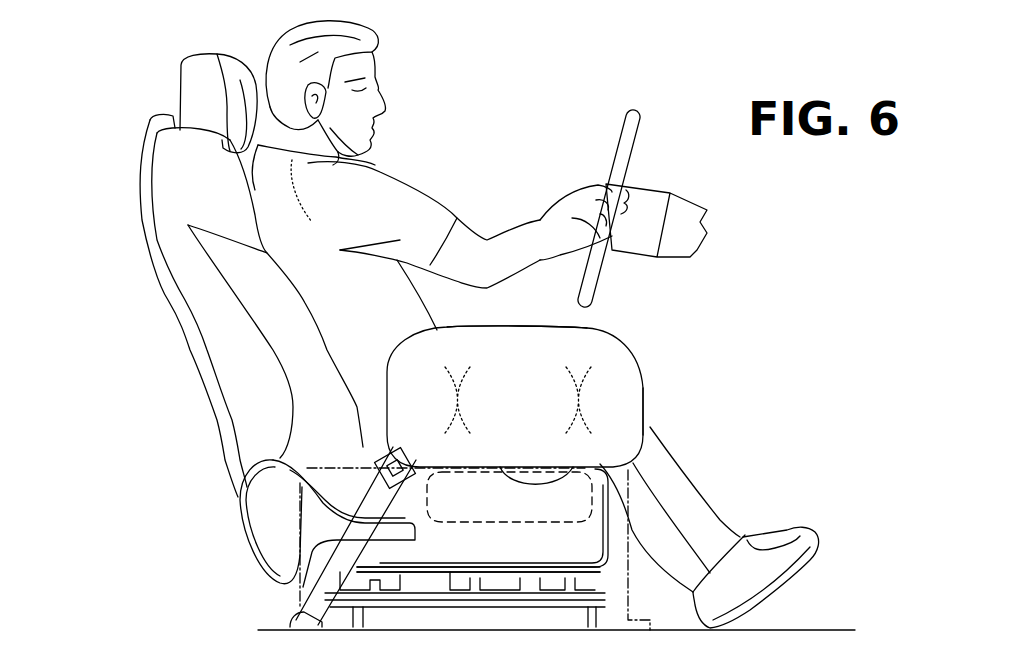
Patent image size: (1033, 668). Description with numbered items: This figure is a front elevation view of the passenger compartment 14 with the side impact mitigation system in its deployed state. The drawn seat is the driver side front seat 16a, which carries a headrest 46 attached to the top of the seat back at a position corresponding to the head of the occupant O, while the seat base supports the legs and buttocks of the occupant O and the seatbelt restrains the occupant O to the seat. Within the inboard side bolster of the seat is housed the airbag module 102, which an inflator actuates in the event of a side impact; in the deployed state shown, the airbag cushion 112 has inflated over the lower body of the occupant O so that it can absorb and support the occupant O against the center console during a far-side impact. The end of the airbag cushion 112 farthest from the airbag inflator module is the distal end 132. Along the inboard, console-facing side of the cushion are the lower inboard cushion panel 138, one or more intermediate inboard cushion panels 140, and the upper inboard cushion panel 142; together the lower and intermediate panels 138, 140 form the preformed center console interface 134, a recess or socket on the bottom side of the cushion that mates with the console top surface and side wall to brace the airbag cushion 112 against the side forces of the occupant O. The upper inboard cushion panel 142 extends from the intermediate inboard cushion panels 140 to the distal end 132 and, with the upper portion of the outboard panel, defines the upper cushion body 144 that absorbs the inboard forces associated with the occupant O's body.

The headrest 46 is at (178, 91).
The driver side front seat 16a is at (137, 175).
The passenger compartment 14 is at (190, 352).
The occupant O is at (377, 69).
The distal end 132 is at (512, 325).
The upper cushion body 144 is at (583, 368).
The airbag cushion 112 is at (636, 352).
The upper inboard cushion panel 142 is at (620, 403).
The intermediate inboard cushion panel 140 is at (600, 467).
The lower inboard cushion panel 138 is at (607, 477).
The center console interface 134 is at (858, 433).
The airbag module 102 is at (553, 522).